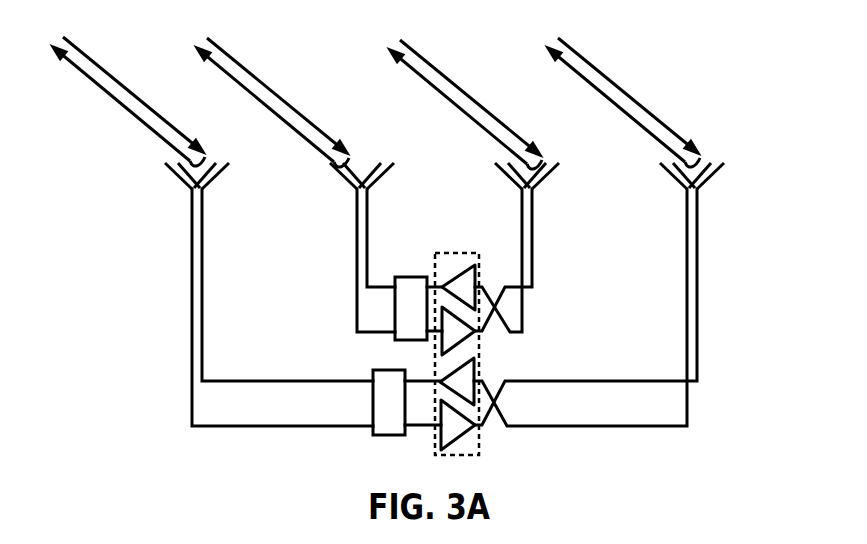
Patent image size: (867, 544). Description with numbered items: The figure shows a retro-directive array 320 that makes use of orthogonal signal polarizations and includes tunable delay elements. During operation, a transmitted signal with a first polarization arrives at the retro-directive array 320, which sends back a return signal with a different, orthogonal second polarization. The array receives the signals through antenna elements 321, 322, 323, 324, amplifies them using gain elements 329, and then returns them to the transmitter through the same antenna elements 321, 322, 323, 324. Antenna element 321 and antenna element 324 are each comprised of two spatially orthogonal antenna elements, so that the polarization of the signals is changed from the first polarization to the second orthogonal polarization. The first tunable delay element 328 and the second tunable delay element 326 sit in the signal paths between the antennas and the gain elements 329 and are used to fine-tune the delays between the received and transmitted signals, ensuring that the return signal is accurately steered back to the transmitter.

The retro-directive array 320 is at (102, 336).
The antenna element 321 is at (151, 118).
The antenna element 322 is at (296, 113).
The antenna element 323 is at (486, 114).
The antenna element 324 is at (645, 122).
The tunable delay element D2 326 is at (411, 294).
The tunable delay element D1 328 is at (391, 415).
The gain elements 329 is at (457, 366).